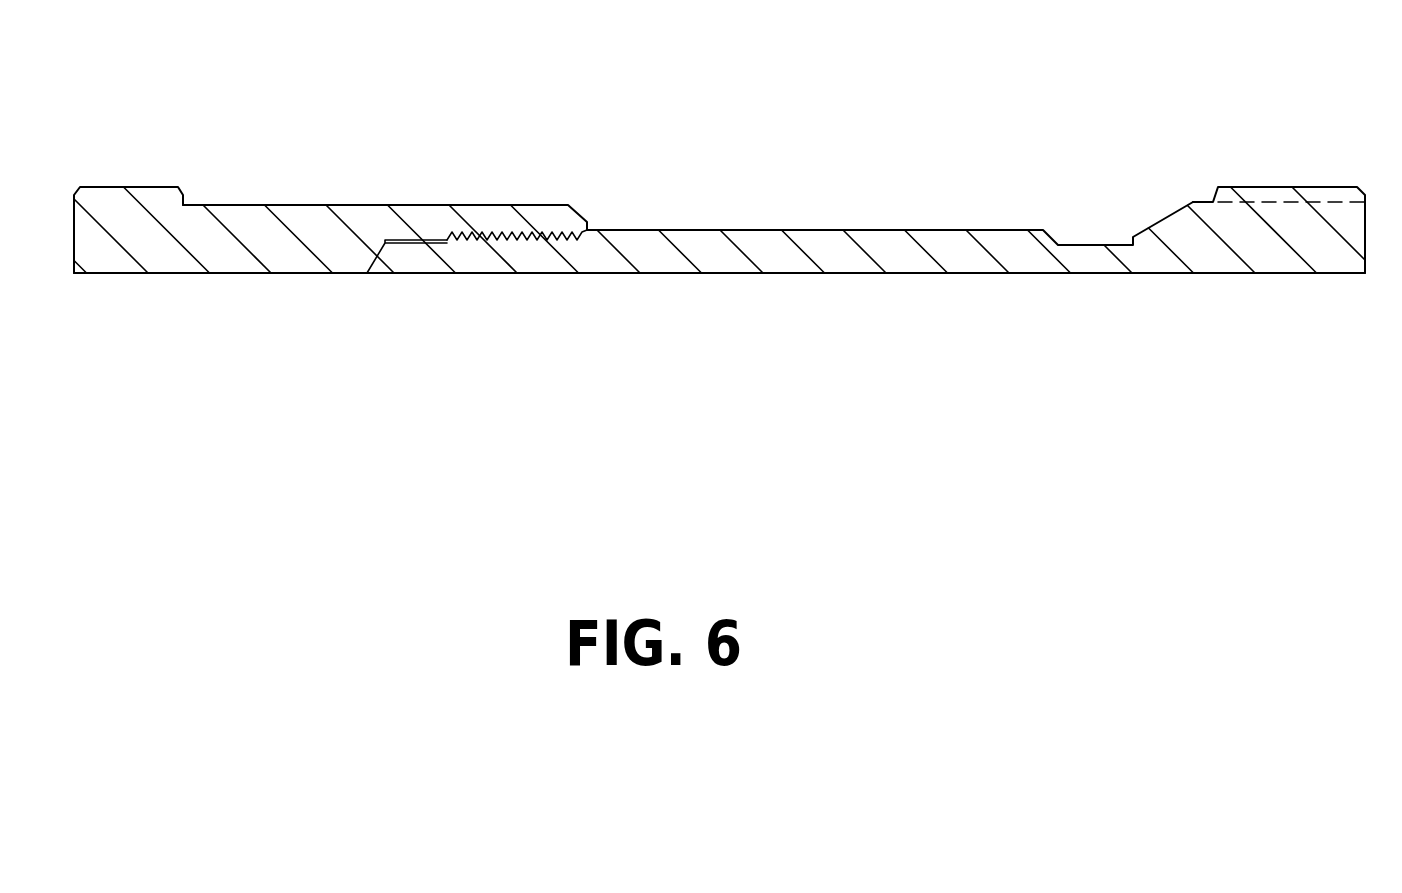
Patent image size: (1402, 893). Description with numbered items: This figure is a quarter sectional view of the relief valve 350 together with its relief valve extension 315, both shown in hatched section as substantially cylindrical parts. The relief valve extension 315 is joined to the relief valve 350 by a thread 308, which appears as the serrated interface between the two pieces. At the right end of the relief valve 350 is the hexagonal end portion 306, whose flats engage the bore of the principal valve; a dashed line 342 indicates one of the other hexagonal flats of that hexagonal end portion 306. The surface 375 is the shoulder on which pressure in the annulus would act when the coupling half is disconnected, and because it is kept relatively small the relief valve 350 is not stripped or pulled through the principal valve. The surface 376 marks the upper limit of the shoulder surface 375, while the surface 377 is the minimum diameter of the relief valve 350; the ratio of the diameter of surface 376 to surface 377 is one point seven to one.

The hexagonal end portion 306 is at (1273, 231).
The thread 308 is at (503, 238).
The relief valve extension 315 is at (112, 235).
The dashed line 342 is at (1253, 202).
The relief valve 350 is at (927, 253).
The surface 375 is at (588, 230).
The surface 376 is at (293, 205).
The surface 377 is at (754, 232).